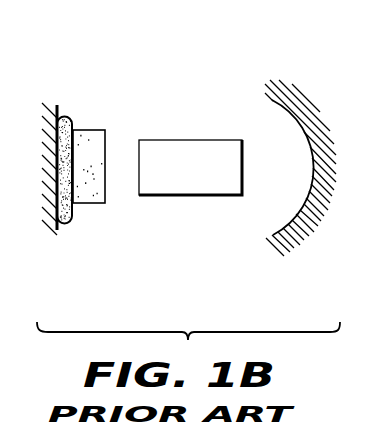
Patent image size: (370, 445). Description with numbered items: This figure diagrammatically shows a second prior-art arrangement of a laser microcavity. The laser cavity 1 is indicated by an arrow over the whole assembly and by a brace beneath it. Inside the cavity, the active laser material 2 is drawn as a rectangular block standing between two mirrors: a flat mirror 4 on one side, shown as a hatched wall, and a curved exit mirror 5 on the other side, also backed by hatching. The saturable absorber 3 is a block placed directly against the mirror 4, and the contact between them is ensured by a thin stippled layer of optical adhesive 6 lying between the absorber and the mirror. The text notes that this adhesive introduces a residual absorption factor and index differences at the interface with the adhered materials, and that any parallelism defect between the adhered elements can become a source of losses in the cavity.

The laser cavity 1 is at (180, 117).
The active laser material 2 is at (183, 182).
The saturable absorber 3 is at (91, 204).
The entrance mirror 4 is at (58, 109).
The exit mirror 5 is at (301, 124).
The optical adhesive 6 is at (67, 224).